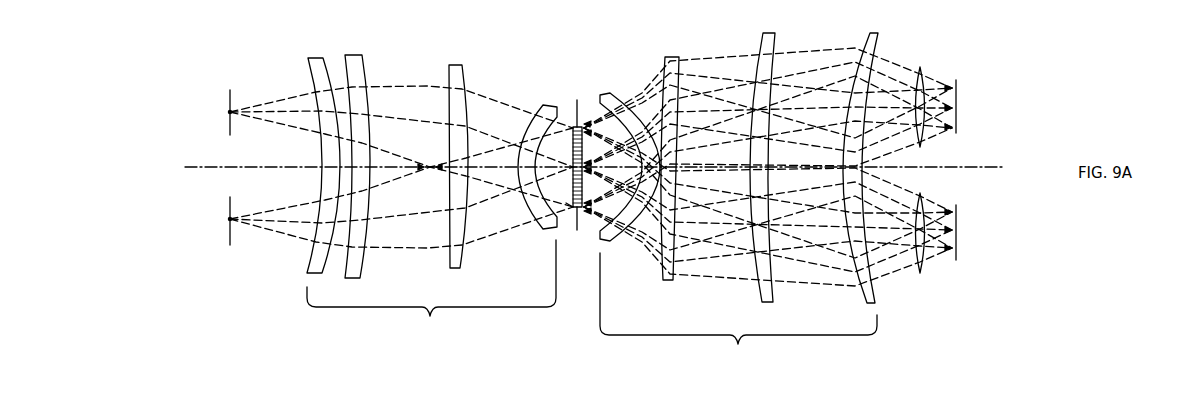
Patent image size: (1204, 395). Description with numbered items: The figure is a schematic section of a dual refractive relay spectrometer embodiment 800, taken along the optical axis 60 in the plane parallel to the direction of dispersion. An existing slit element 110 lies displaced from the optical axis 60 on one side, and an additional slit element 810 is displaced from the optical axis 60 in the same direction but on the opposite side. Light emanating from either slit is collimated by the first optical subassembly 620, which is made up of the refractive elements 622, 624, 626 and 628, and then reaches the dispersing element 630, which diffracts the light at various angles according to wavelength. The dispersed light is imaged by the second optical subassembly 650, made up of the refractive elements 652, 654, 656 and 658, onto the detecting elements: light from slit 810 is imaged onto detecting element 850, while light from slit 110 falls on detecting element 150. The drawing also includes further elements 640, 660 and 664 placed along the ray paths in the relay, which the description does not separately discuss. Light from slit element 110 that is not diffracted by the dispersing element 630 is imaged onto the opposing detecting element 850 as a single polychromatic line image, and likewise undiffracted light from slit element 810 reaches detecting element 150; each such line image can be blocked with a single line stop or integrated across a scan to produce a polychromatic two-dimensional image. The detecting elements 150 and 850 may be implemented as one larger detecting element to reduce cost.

The dual refractive relay spectrometer embodiment 800 is at (262, 26).
The optical axis 60 is at (208, 168).
The slit element 110 is at (229, 94).
The slit element 810 is at (230, 245).
The first optical subassembly 620 is at (431, 292).
The refractive element 622 is at (318, 63).
The refractive element 624 is at (353, 60).
The refractive element 626 is at (457, 67).
The refractive element 628 is at (553, 105).
The dispersing element 630 is at (566, 206).
The intermediate optical element 640 is at (577, 100).
The second optical subassembly 650 is at (738, 312).
The refractive element 652 is at (603, 94).
The refractive element 654 is at (670, 57).
The refractive element 656 is at (770, 33).
The refractive element 658 is at (875, 33).
The lens element 660 is at (919, 67).
The lens element 664 is at (921, 274).
The detecting element 150 is at (956, 80).
The detecting element 850 is at (956, 258).